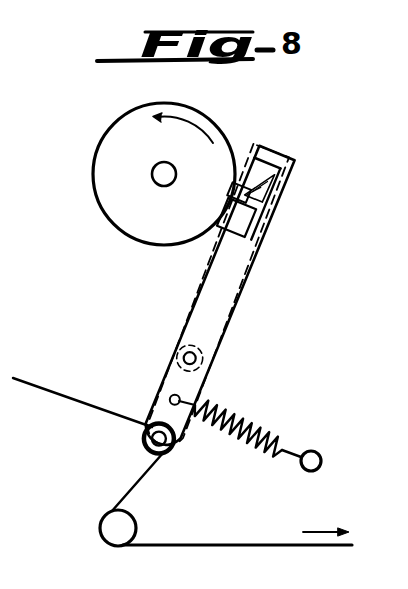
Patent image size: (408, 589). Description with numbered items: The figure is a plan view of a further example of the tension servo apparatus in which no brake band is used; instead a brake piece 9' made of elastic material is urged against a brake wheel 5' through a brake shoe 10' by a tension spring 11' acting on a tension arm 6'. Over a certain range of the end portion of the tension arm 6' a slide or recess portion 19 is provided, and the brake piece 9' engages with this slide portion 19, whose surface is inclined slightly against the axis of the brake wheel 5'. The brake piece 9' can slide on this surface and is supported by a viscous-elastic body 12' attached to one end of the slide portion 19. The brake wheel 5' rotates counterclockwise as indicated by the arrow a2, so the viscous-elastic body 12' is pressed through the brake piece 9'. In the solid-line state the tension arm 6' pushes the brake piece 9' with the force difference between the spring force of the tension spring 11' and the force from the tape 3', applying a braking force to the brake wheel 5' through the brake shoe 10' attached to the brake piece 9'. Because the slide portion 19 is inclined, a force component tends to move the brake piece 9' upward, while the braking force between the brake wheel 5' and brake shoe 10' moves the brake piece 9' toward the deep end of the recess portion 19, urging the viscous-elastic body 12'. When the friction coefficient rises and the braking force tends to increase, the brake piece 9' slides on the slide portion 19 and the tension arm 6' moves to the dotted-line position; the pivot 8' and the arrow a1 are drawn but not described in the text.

The tape 3' is at (182, 462).
The brake wheel 5' is at (147, 174).
The tension arm 6' is at (220, 295).
The arm pivot 8' is at (167, 357).
The brake piece 9' is at (283, 206).
The brake shoe 10' is at (202, 235).
The tension spring 11' is at (250, 422).
The viscous-elastic body 12' is at (266, 153).
The slide portion 19 is at (256, 252).
The direction of movement a1 is at (324, 529).
The arrow indicating counterclockwise rotation of the brake wheel a2 is at (195, 127).